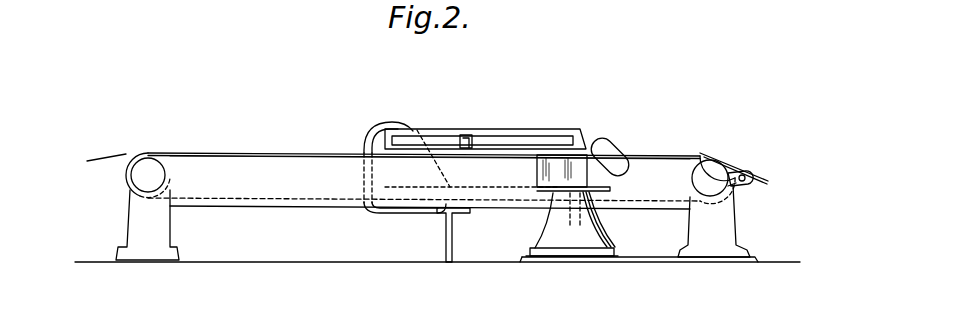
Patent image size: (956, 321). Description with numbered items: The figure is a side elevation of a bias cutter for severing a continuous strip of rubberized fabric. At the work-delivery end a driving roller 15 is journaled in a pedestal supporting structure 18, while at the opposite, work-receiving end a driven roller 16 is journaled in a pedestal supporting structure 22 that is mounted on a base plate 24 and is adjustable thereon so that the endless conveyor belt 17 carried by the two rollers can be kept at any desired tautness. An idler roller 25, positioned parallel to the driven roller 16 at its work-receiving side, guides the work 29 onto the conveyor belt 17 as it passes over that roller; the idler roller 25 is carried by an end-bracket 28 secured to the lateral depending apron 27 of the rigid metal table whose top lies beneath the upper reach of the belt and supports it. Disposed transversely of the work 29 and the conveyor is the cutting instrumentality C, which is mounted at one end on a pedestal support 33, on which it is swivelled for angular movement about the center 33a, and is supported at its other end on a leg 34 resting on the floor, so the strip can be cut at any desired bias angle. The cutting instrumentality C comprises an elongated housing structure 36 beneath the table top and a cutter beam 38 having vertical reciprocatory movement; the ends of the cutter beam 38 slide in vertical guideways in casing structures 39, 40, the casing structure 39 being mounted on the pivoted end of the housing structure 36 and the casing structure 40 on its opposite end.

The driving roller 15 is at (169, 163).
The endless conveyor belt 17 is at (272, 153).
The pedestal supporting structure 18 is at (132, 220).
The apron 27 is at (257, 207).
The driven roller 16 is at (699, 163).
The work 29 is at (763, 178).
The idler roller 25 is at (751, 181).
The end-bracket 28 is at (738, 188).
The pedestal supporting structure 22 is at (734, 223).
The base plate 24 is at (661, 255).
The cutting instrumentality C is at (482, 161).
The cutter beam 38 is at (462, 113).
The casing structure 40 is at (364, 135).
The housing structure 36 is at (543, 178).
The casing structure 39 is at (604, 142).
The leg 34 is at (447, 233).
The pedestal support 33 is at (546, 234).
The center 33a is at (565, 222).